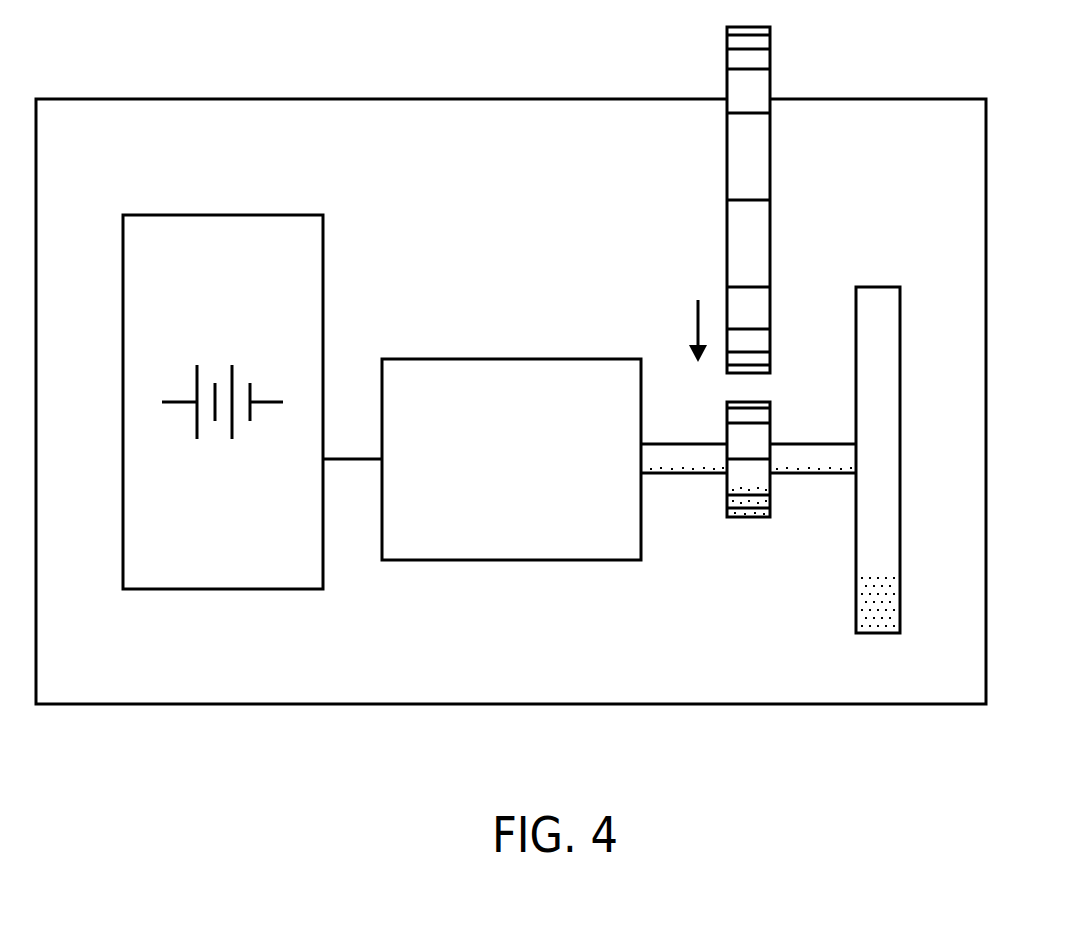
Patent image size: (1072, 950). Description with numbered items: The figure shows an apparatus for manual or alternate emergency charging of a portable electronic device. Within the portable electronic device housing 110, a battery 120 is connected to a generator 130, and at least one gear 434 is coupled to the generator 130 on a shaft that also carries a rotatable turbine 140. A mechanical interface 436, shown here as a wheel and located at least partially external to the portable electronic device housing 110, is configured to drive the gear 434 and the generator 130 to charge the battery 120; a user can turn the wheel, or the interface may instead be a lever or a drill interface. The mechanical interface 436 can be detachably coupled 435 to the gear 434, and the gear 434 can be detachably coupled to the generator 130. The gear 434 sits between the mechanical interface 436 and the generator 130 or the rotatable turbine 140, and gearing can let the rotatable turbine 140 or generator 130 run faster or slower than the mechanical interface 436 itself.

The portable electronic device housing 110 is at (432, 99).
The battery 120 is at (323, 242).
The generator 130 is at (474, 359).
The rotatable turbine 140 is at (878, 287).
The gear 434 is at (738, 517).
The detachable coupling 435 is at (698, 315).
The mechanical interface 436 is at (770, 170).